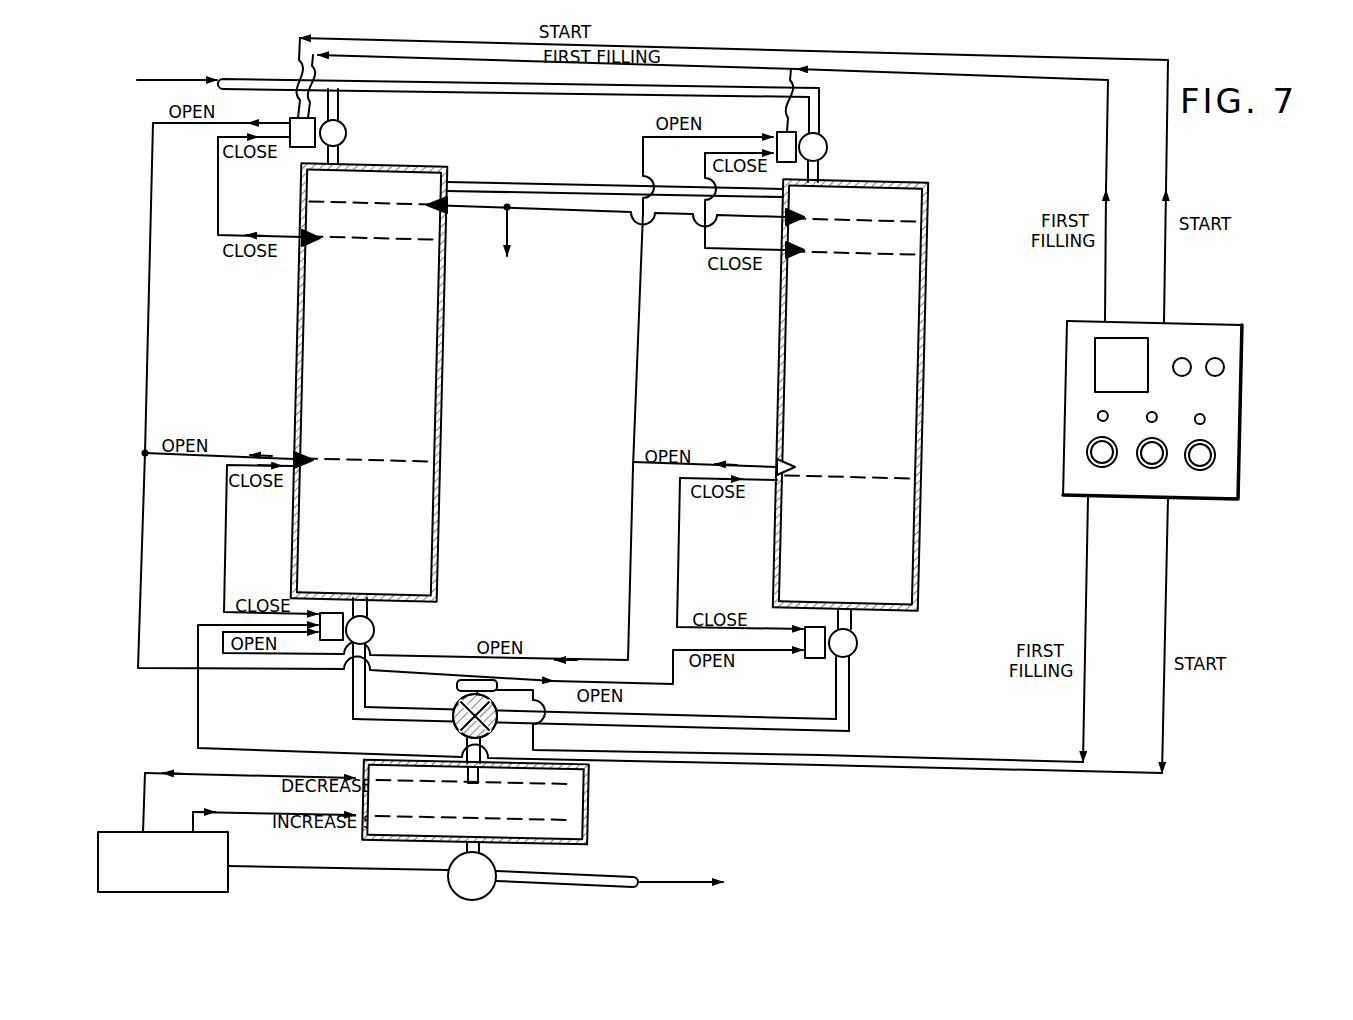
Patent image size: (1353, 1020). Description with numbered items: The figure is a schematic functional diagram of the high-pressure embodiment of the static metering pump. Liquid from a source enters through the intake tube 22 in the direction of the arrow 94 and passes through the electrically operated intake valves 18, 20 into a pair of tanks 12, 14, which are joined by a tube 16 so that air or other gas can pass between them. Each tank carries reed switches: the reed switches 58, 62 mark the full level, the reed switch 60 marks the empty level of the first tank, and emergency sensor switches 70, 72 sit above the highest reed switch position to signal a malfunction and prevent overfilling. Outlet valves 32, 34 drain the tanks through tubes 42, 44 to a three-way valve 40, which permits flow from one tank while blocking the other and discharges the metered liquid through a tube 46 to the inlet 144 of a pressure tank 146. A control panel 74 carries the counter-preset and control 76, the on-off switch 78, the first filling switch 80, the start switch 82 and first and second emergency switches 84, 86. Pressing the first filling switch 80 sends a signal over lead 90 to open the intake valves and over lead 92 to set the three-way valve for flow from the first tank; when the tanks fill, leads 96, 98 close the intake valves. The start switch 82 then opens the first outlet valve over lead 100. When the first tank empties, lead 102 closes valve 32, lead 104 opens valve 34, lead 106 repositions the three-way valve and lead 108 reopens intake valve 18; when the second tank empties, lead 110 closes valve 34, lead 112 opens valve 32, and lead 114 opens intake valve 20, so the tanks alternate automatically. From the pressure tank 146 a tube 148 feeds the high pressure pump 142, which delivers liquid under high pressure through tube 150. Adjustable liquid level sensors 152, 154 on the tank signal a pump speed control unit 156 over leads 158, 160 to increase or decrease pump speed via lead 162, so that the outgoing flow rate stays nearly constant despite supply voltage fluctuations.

The tank 12 is at (443, 410).
The tank 14 is at (926, 394).
The tube 16 is at (535, 182).
The intake valve 18 is at (347, 132).
The intake valve 20 is at (829, 139).
The intake tube 22 is at (558, 98).
The outlet valve 32 is at (376, 633).
The outlet valve 34 is at (860, 651).
The three-way valve 40 is at (454, 727).
The tube 42 is at (350, 697).
The tube 44 is at (774, 714).
The tube 46 is at (482, 736).
The reed switch 58 is at (306, 246).
The reed switch 60 is at (298, 452).
The reed switch 62 is at (787, 258).
The emergency sensor switch 70 is at (446, 218).
The emergency sensor switch 72 is at (788, 222).
The control panel 74 is at (1240, 412).
The counter-preset and control 76 is at (1095, 360).
The on-off switch 78 is at (1090, 458).
The first filling switch 80 is at (1145, 462).
The start switch 82 is at (1212, 460).
The first emergency switch 84 is at (1186, 358).
The second emergency switch 86 is at (1220, 360).
The lead 90 is at (1106, 174).
The lead 92 is at (1086, 598).
The arrow 94 is at (178, 60).
The lead 96 is at (218, 185).
The lead 98 is at (705, 228).
The lead 100 is at (1170, 591).
The lead 102 is at (1170, 176).
The lead 104 is at (140, 570).
The lead 106 is at (456, 684).
The lead 108 is at (150, 347).
The lead 110 is at (680, 573).
The lead 112 is at (628, 562).
The lead 114 is at (636, 402).
The high pressure pump 142 is at (447, 870).
The inlet 144 is at (430, 757).
The pressure tank 146 is at (589, 806).
The tube 148 is at (481, 848).
The tube 150 is at (598, 875).
The liquid level sensor 152 is at (358, 777).
The liquid level sensor 154 is at (358, 822).
The pump speed control unit 156 is at (98, 860).
The lead 158 is at (145, 780).
The lead 160 is at (225, 810).
The lead 162 is at (296, 872).